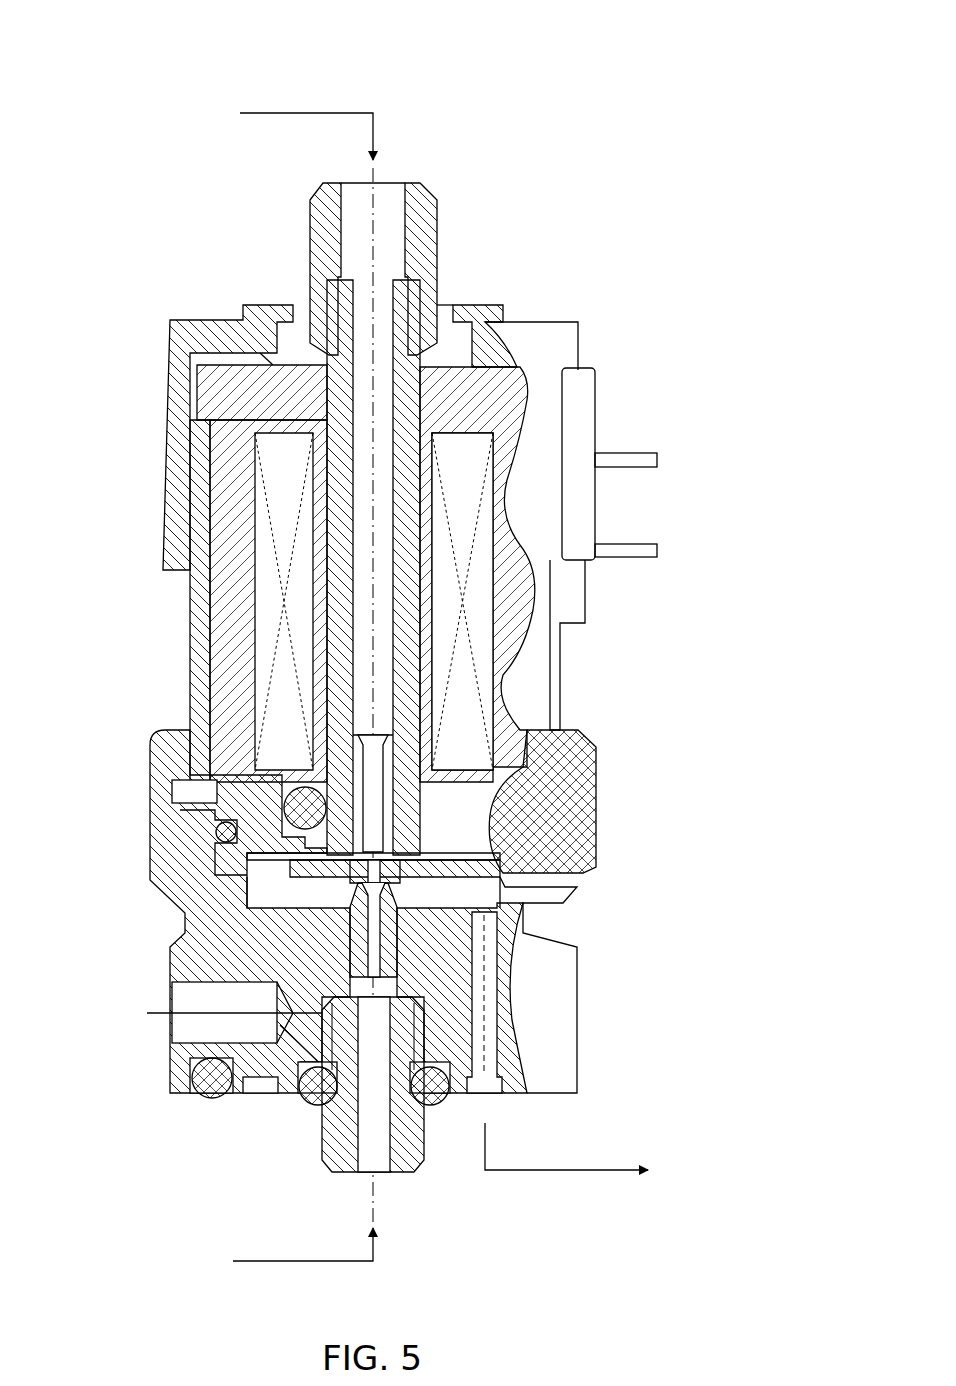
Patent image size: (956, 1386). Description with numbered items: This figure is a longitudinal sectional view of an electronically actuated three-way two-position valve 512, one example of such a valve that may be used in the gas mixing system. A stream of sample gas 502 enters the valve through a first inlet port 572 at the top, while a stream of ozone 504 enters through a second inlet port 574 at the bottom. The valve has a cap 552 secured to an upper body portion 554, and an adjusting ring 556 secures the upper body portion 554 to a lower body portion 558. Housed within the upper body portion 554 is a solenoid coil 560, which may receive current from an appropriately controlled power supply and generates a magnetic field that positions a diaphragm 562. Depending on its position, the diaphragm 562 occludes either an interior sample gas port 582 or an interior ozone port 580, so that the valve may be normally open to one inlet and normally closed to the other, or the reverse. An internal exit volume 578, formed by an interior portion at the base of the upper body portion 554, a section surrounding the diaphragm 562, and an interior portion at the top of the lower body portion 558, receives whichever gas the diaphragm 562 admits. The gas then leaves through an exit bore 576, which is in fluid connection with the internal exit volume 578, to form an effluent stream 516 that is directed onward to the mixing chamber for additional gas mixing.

The stream of sample gas 502 is at (262, 113).
The stream of ozone 504 is at (263, 1261).
The electronically actuated 3/2 way valve 512 is at (562, 70).
The effluent stream 516 is at (572, 1172).
The cap 552 is at (578, 345).
The upper body portion 554 is at (560, 690).
The adjusting ring 556 is at (596, 810).
The lower body portion 558 is at (578, 1073).
The solenoid coil 560 is at (263, 665).
The diaphragm 562 is at (350, 878).
The first inlet port 572 is at (437, 212).
The second inlet port 574 is at (322, 1125).
The exit bore 576 is at (500, 1096).
The internal exit volume 578 is at (267, 890).
The interior ozone port 580 is at (372, 883).
The interior sample gas port 582 is at (362, 848).